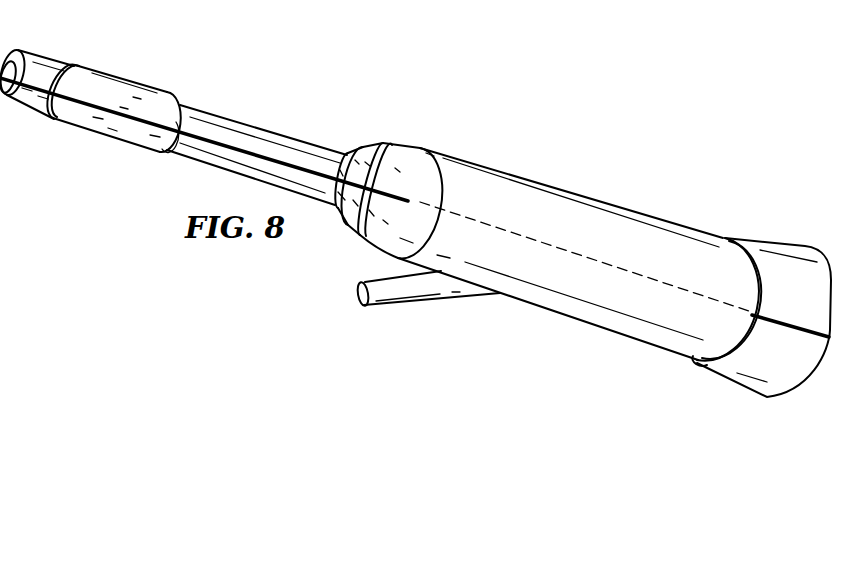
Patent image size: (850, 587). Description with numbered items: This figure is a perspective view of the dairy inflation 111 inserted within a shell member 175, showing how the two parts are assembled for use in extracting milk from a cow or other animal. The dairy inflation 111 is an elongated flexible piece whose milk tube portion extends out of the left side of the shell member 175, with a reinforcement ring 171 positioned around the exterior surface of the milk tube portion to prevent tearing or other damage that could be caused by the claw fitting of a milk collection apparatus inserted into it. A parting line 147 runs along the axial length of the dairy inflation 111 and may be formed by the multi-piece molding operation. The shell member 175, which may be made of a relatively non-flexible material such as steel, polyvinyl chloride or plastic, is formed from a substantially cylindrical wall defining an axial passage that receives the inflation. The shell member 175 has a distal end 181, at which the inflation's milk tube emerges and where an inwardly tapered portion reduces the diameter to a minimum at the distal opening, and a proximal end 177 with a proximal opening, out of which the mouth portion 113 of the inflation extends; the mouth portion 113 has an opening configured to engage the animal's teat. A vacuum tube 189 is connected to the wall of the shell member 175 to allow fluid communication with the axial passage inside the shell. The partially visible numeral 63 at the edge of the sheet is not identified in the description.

The parting line 147 is at (240, 132).
The reinforcement ring 171 is at (123, 78).
The dairy inflation 111 is at (318, 143).
The distal end 181 is at (447, 154).
The shell member 175 is at (572, 196).
The proximal end 177 is at (711, 238).
The mouth portion 113 is at (785, 241).
The vacuum tube 189 is at (423, 306).
The partially visible element 63 is at (0, 264).